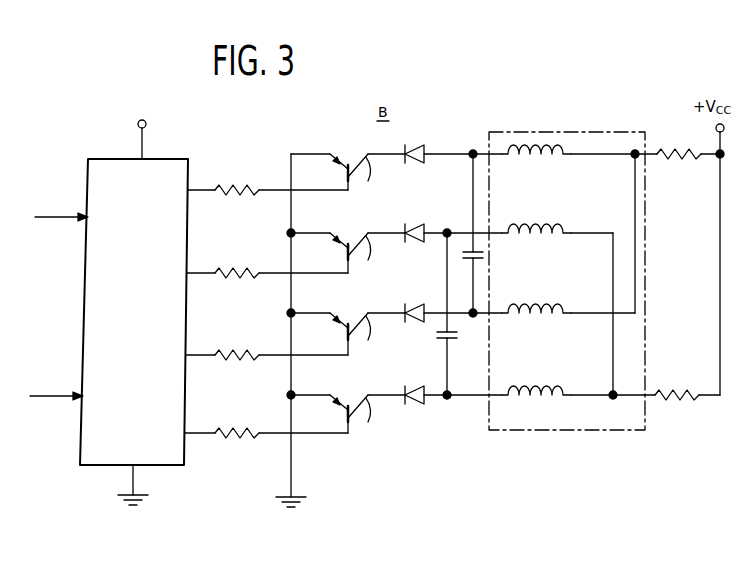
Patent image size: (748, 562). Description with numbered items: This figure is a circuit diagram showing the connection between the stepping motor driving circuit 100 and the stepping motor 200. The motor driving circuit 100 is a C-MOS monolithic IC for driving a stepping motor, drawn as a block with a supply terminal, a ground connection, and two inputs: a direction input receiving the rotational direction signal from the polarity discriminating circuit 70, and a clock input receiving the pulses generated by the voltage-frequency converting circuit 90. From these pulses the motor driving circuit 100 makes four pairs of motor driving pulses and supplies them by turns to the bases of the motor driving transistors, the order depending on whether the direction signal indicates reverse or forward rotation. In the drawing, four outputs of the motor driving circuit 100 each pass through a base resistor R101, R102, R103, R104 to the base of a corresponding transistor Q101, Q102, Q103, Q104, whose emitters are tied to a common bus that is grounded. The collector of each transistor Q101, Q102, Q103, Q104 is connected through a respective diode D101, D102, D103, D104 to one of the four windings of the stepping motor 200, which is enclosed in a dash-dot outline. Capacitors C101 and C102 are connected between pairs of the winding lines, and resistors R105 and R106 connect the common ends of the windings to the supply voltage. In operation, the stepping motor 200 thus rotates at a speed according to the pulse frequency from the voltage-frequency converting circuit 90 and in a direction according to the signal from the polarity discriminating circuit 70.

The motor driving circuit 100 is at (190, 157).
The polarity discriminating circuit 70 is at (49, 212).
The voltage-frequency converting circuit 90 is at (41, 393).
The stepping motor 200 is at (526, 132).
The resistor R101 is at (268, 203).
The resistor R102 is at (267, 287).
The resistor R103 is at (267, 372).
The resistor R104 is at (266, 450).
The resistor R105 is at (677, 171).
The resistor R106 is at (666, 386).
The transistor Q101 is at (348, 176).
The transistor Q102 is at (348, 259).
The transistor Q103 is at (348, 341).
The transistor Q104 is at (348, 425).
The diode D101 is at (439, 141).
The diode D102 is at (426, 221).
The diode D103 is at (439, 303).
The diode D104 is at (426, 380).
The capacitor C101 is at (483, 262).
The capacitor C102 is at (463, 335).